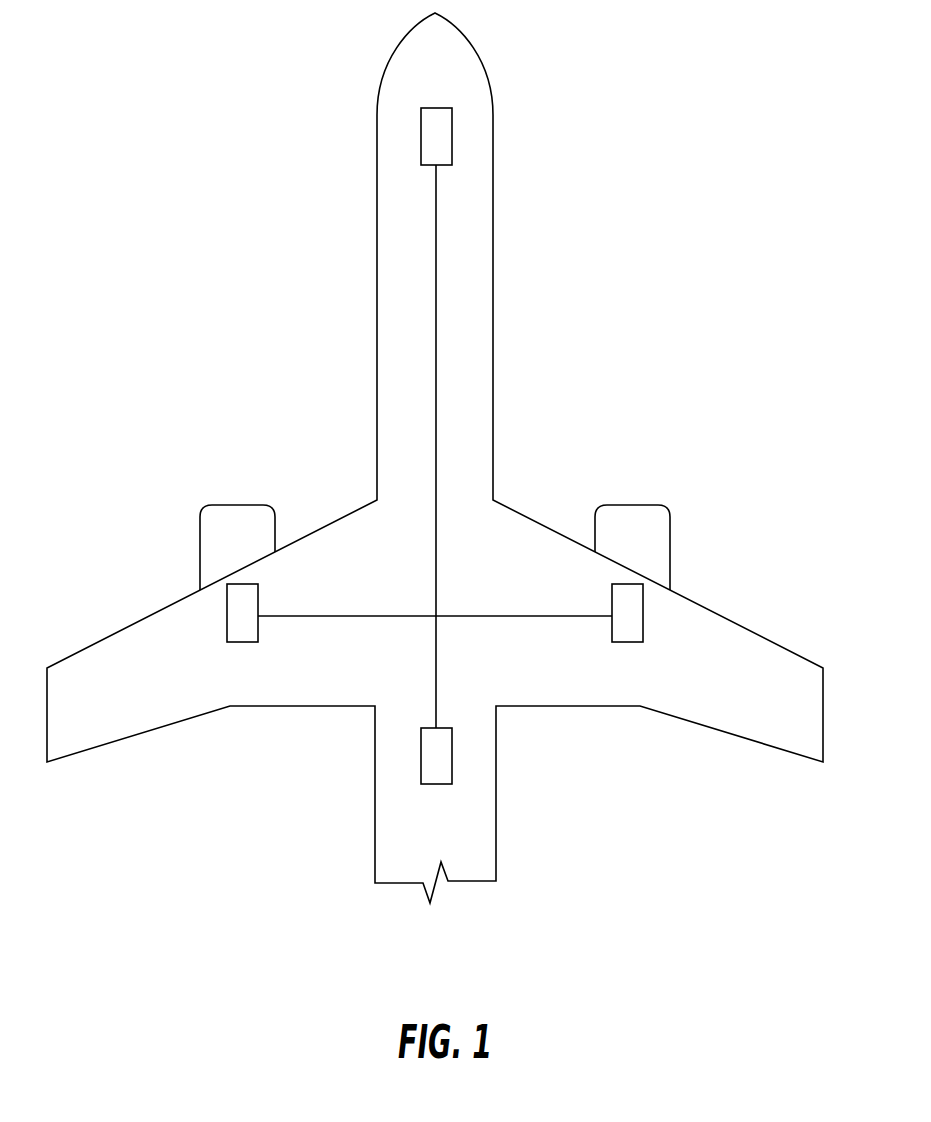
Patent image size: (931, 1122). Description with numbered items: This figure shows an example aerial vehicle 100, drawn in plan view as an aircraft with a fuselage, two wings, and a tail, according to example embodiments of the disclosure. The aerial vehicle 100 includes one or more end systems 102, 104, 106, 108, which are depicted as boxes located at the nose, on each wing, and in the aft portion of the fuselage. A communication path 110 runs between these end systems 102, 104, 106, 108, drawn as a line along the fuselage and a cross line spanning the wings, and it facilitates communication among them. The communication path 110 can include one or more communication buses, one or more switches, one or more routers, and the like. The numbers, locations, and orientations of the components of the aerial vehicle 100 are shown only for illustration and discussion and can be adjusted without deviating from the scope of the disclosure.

The aerial vehicle 100 is at (435, 458).
The end system 102 is at (452, 150).
The end system 104 is at (643, 617).
The end system 106 is at (452, 762).
The end system 108 is at (227, 617).
The communication path 110 is at (436, 382).